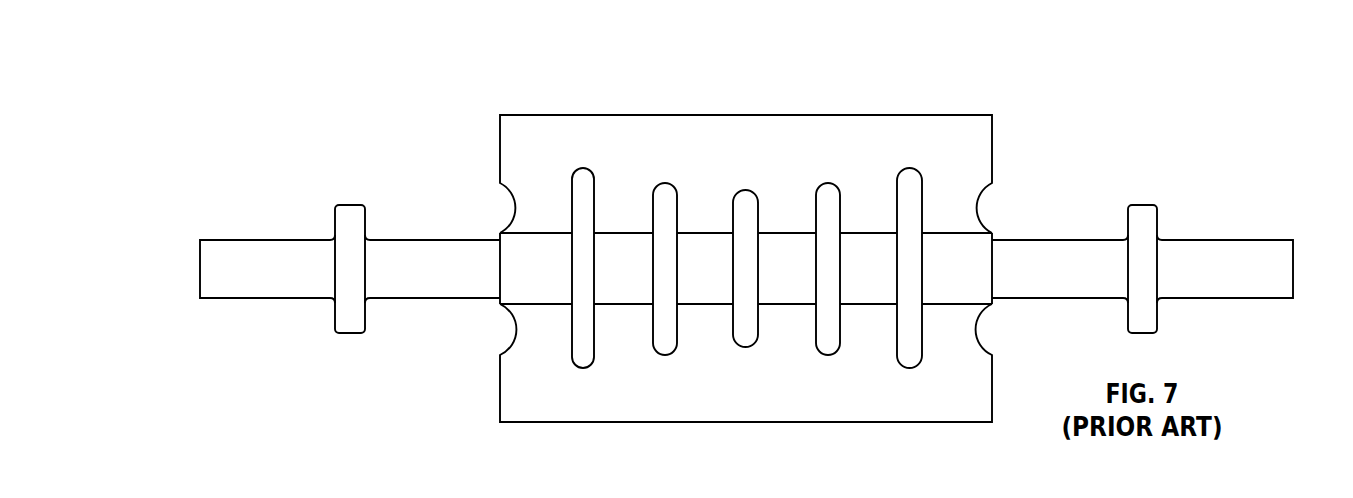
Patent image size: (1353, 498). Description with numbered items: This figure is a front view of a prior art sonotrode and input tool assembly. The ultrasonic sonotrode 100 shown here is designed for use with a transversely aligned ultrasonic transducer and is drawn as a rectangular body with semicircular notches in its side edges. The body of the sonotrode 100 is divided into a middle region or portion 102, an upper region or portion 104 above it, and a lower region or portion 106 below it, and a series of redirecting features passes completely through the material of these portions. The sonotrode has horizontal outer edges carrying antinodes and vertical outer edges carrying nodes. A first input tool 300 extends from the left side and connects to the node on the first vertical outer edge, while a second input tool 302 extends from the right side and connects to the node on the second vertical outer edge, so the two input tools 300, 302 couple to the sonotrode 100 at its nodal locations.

The ultrasonic sonotrode 100 is at (746, 233).
The middle region or portion 102 is at (523, 284).
The upper region or portion 104 is at (722, 159).
The lower region or portion 106 is at (761, 401).
The first input tool 300 is at (417, 227).
The second input tool 302 is at (1048, 227).